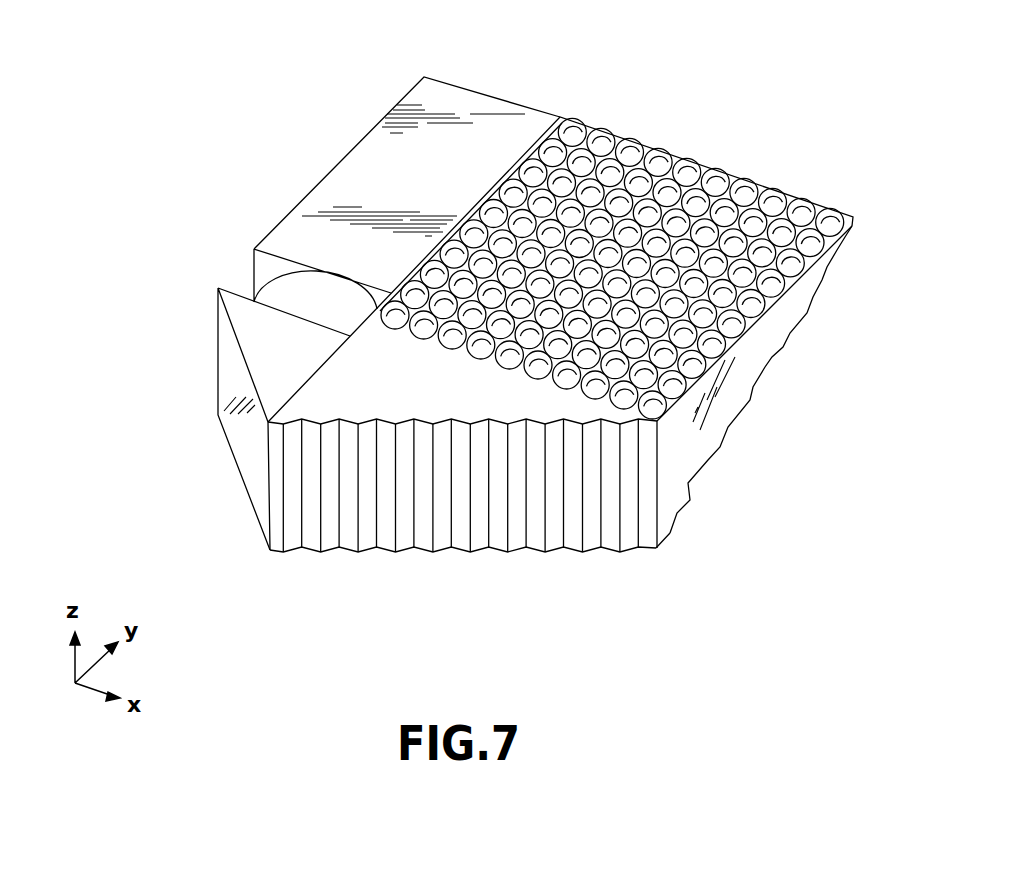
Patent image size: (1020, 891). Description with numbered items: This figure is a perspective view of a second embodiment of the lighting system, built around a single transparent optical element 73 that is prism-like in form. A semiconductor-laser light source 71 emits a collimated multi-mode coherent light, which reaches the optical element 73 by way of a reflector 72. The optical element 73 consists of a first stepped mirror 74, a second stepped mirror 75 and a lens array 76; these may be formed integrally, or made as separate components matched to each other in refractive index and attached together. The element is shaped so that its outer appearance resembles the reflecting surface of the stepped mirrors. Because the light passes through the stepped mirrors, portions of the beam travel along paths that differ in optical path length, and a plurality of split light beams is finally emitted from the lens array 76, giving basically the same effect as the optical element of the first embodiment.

The semiconductor-laser light source 71 is at (378, 147).
The reflector 72 is at (242, 453).
The transparent optical element 73 is at (695, 463).
The first stepped mirror 74 is at (520, 552).
The second stepped mirror 75 is at (787, 343).
The lens array 76 is at (692, 167).